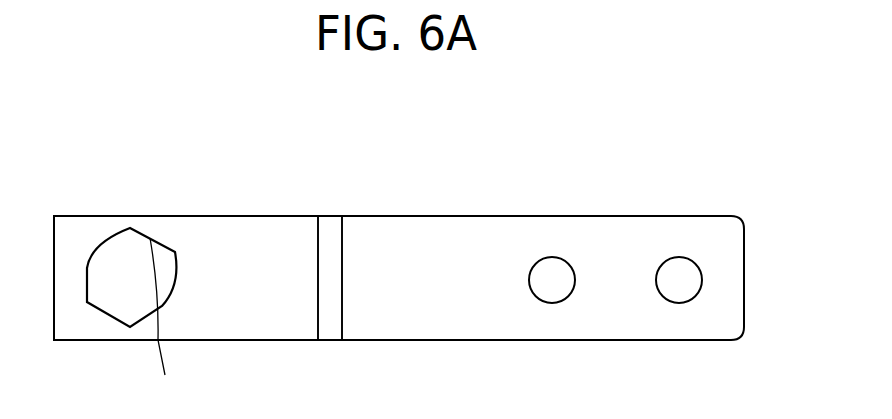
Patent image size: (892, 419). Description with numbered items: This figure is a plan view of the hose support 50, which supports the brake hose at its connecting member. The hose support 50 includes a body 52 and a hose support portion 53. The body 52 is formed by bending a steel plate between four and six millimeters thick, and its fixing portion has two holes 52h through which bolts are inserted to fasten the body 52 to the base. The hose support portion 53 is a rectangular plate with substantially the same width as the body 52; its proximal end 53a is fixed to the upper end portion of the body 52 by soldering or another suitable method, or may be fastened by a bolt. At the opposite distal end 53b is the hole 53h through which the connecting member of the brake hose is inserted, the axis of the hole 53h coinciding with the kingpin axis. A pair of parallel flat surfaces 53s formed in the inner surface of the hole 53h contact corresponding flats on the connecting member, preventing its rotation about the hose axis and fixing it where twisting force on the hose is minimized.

The hose support 50 is at (609, 181).
The body 52 is at (422, 230).
The holes 52h is at (665, 299).
The hose support portion 53 is at (223, 228).
The proximal end 53a is at (318, 290).
The distal end 53b is at (78, 340).
The hole 53h is at (107, 243).
The flat surfaces 53s is at (118, 310).